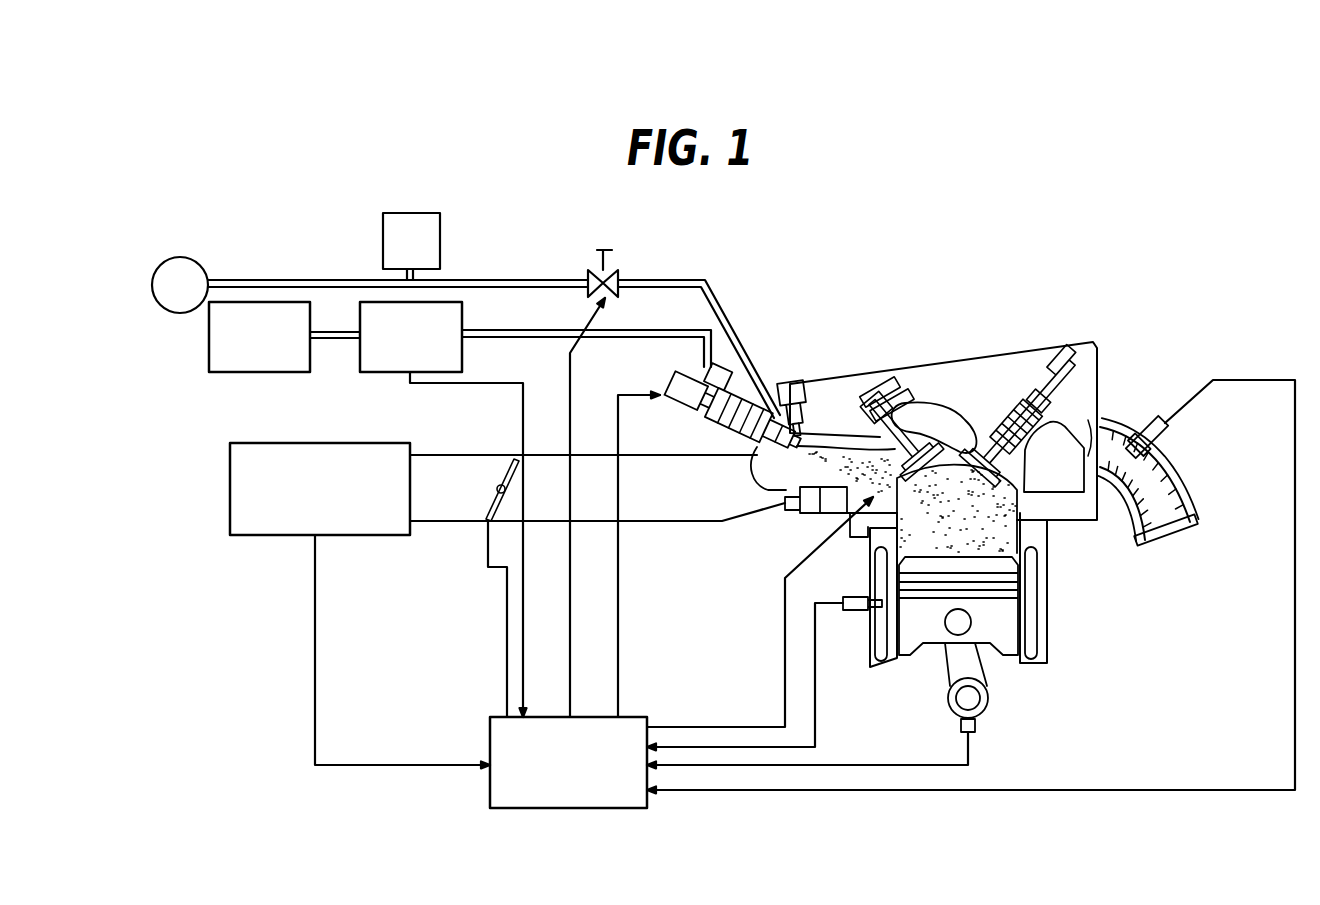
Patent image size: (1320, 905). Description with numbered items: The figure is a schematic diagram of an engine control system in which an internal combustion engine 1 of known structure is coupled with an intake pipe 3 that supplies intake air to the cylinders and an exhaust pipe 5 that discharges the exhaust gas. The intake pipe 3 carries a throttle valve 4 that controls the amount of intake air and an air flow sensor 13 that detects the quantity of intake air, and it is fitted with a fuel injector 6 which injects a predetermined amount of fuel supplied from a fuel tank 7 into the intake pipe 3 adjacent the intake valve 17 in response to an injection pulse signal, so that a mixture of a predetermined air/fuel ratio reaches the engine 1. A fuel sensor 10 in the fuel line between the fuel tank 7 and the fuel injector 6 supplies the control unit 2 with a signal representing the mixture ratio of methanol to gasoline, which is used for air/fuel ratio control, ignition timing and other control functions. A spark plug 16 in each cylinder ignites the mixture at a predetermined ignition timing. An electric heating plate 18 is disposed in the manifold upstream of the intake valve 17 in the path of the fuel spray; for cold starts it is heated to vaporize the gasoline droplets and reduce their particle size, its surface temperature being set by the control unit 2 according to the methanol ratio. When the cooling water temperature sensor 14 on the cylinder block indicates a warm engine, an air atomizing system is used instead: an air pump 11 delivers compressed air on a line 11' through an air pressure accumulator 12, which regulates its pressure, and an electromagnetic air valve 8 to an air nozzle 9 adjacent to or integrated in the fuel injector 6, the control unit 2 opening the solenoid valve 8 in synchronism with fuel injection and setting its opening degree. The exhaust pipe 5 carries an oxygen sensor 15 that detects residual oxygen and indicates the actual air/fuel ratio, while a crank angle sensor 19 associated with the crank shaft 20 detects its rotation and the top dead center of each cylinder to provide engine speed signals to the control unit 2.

The internal combustion engine 1 is at (1052, 587).
The control unit 2 is at (631, 715).
The intake pipe 3 is at (456, 524).
The throttle valve 4 is at (497, 487).
The exhaust pipe 5 is at (1178, 491).
The fuel injector 6 is at (726, 428).
The fuel tank 7 is at (230, 372).
The electromagnetic air valve 8 is at (613, 262).
The air nozzle 9 is at (788, 412).
The fuel sensor 10 is at (370, 372).
The air pump 11 is at (172, 312).
The air line 11' is at (494, 323).
The air pressure accumulator 12 is at (382, 236).
The air flow sensor 13 is at (244, 538).
The temperature sensor 14 is at (850, 612).
The oxygen sensor 15 is at (1168, 437).
The spark plug 16 is at (1088, 362).
The intake valve 17 is at (858, 532).
The electric heating plate 18 is at (828, 507).
The crank angle sensor 19 is at (977, 727).
The crank shaft 20 is at (970, 700).